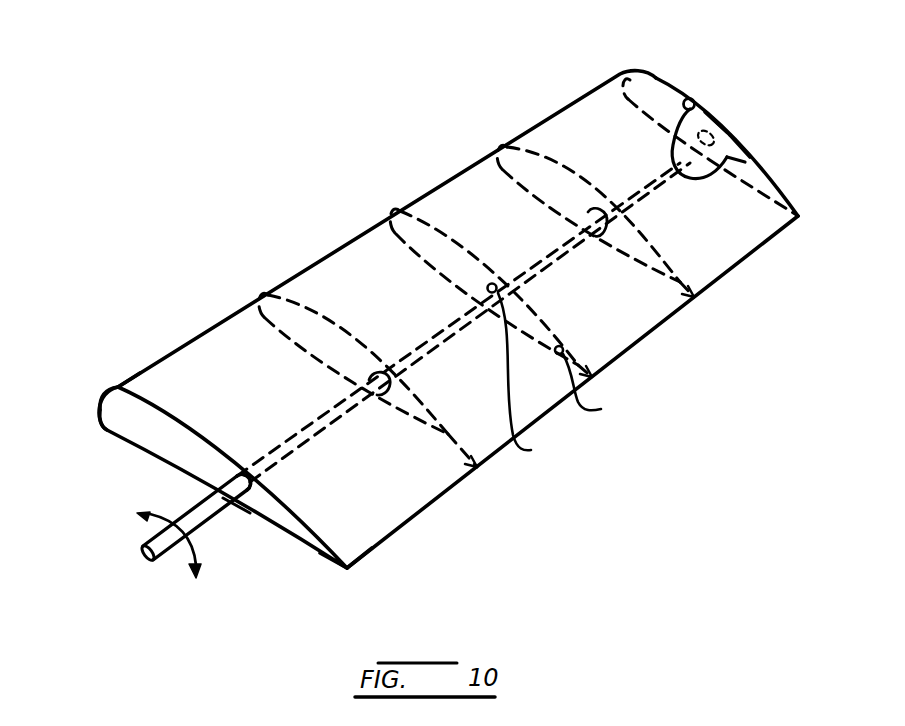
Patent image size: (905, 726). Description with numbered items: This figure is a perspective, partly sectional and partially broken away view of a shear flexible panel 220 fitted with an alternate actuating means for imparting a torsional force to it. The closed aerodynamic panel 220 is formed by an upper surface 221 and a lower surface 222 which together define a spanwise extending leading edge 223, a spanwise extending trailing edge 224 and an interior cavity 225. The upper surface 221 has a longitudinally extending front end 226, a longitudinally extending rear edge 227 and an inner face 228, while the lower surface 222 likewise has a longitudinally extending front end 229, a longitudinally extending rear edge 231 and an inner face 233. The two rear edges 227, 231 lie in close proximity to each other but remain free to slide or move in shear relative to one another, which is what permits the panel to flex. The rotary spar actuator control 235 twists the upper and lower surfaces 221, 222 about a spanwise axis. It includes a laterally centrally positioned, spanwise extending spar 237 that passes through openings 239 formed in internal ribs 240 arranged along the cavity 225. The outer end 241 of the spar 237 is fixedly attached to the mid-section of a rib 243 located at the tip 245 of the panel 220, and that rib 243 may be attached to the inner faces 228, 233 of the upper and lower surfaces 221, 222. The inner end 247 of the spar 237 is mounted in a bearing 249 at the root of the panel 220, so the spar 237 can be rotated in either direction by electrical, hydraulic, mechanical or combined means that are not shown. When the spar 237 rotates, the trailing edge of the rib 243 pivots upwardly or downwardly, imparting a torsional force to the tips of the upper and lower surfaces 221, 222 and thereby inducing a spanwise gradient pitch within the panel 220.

The shear flexible panel 220 is at (492, 118).
The upper surface 221 is at (231, 336).
The lower surface 222 is at (167, 463).
The leading edge 223 is at (100, 408).
The trailing edge 224 is at (366, 566).
The interior cavity 225 is at (717, 118).
The front end 226 is at (129, 347).
The rear edge 227 is at (418, 513).
The inner face 228 is at (693, 98).
The front end 229 is at (103, 430).
The rear edge 231 is at (342, 569).
The inner face 233 is at (747, 160).
The rotary spar actuator control 235 is at (143, 552).
The spar 237 is at (173, 543).
The openings 239 is at (533, 375).
The internal ribs 240 is at (602, 385).
The outer end 241 is at (727, 126).
The rib 243 is at (740, 144).
The tip 245 is at (777, 186).
The inner end 247 is at (236, 503).
The bearing 249 is at (248, 487).